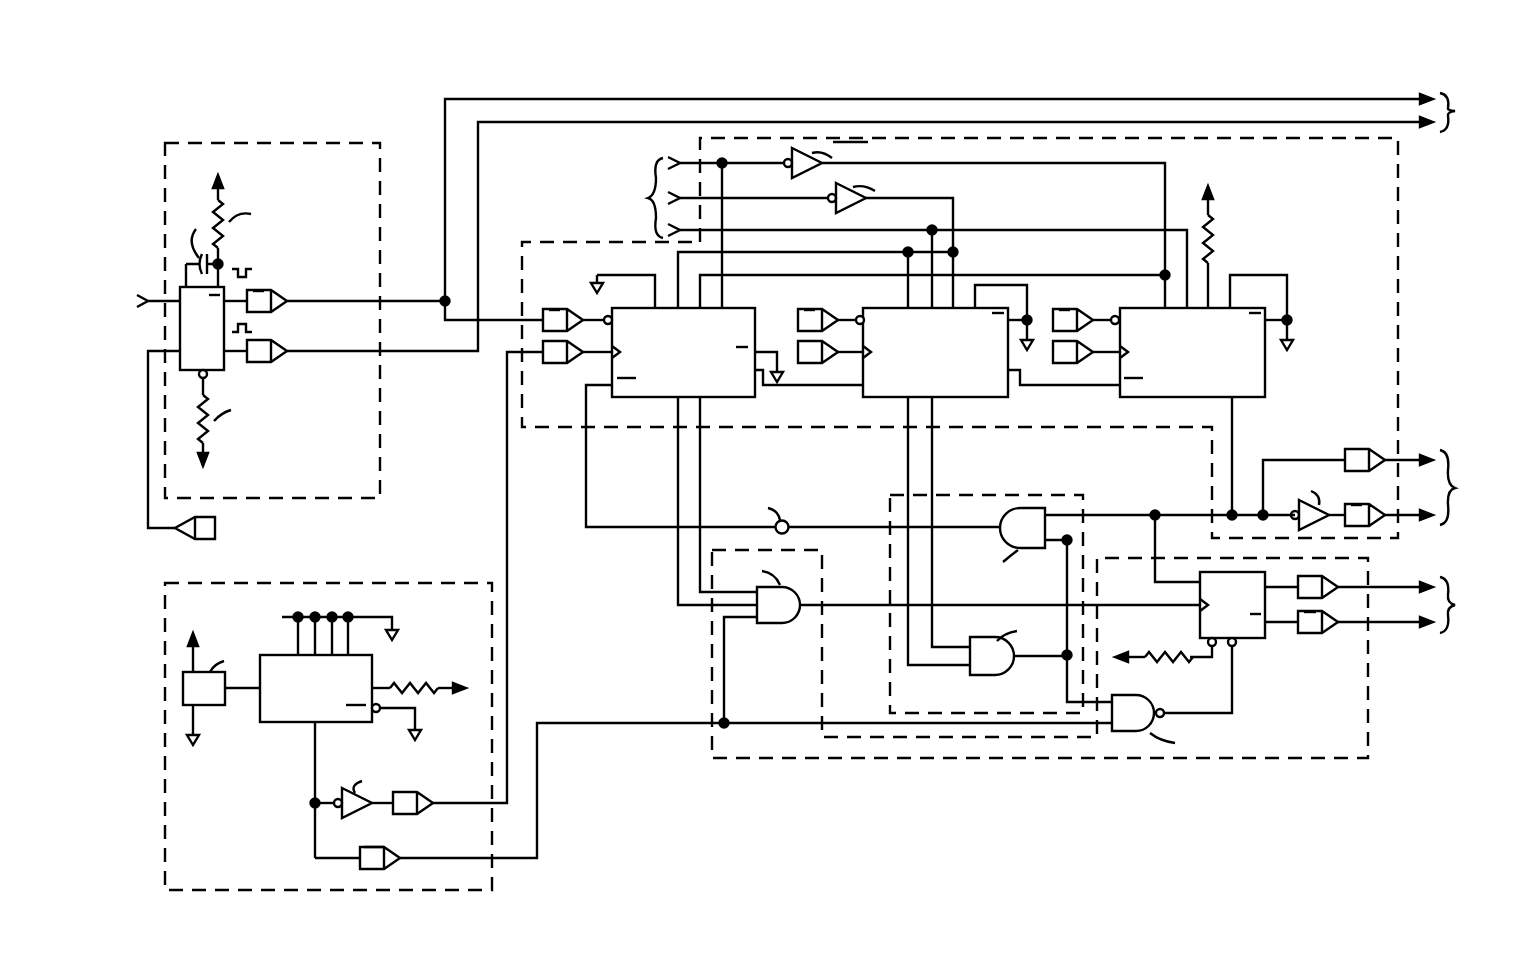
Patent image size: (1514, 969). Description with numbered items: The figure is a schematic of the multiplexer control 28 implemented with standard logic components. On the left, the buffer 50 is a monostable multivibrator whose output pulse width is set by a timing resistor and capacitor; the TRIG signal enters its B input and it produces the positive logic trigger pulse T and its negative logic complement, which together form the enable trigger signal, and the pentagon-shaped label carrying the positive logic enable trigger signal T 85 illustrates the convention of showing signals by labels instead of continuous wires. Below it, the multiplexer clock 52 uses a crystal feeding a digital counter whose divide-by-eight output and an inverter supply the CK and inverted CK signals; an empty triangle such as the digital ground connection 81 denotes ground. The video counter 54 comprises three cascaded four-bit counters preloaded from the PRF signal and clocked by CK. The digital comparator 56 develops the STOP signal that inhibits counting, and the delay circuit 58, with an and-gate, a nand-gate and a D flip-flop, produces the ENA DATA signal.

The multiplexer control 28 is at (727, 797).
The buffer 50 is at (246, 140).
The multiplexer clock 52 is at (497, 876).
The video counter 54 is at (1400, 219).
The digital comparator 56 is at (990, 493).
The delay circuit 58 is at (1370, 716).
The digital ground connection 81 is at (197, 747).
The positive logic enable trigger signal T 85 is at (277, 297).